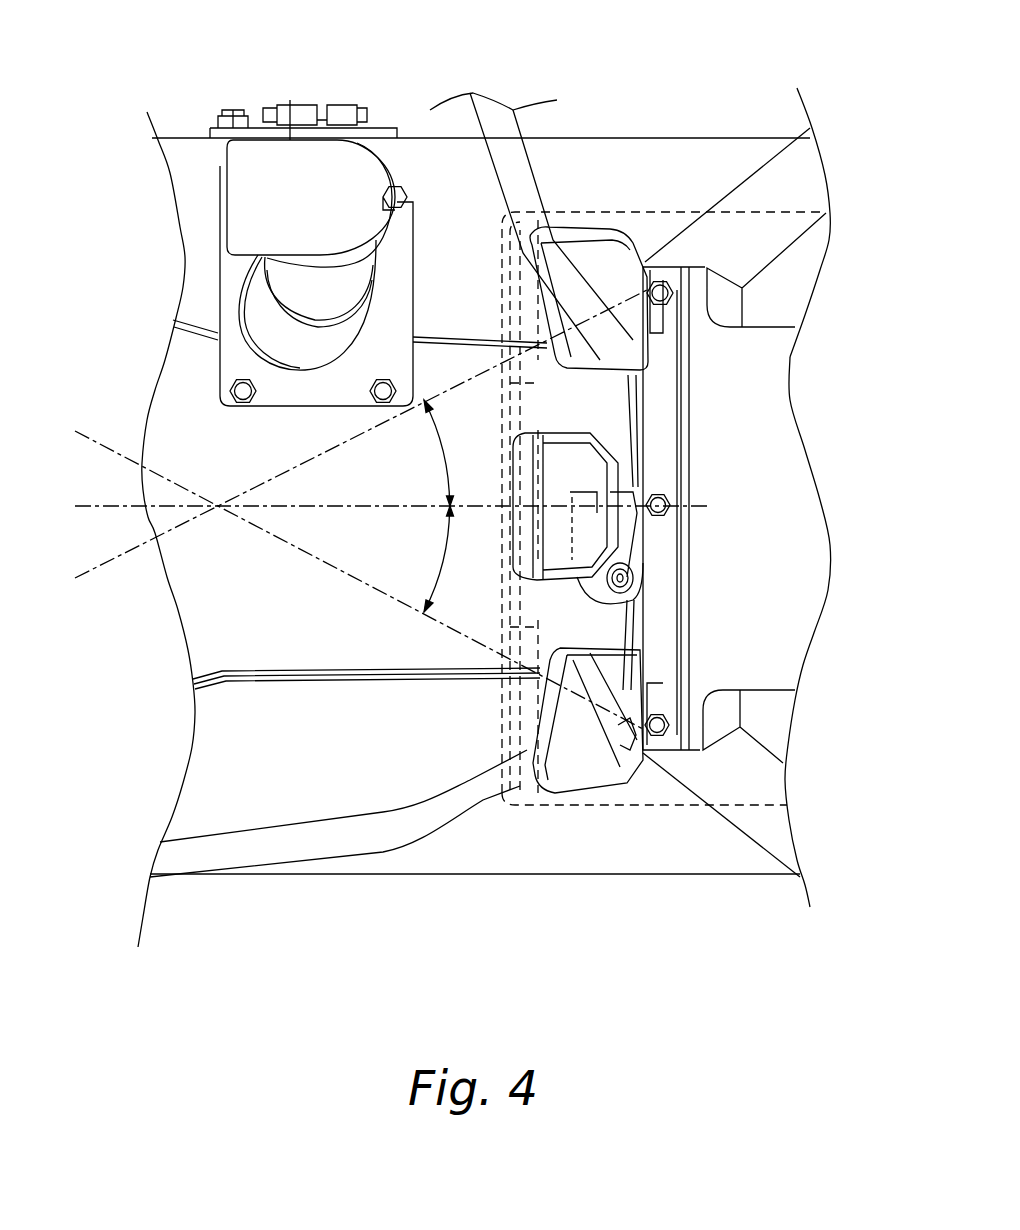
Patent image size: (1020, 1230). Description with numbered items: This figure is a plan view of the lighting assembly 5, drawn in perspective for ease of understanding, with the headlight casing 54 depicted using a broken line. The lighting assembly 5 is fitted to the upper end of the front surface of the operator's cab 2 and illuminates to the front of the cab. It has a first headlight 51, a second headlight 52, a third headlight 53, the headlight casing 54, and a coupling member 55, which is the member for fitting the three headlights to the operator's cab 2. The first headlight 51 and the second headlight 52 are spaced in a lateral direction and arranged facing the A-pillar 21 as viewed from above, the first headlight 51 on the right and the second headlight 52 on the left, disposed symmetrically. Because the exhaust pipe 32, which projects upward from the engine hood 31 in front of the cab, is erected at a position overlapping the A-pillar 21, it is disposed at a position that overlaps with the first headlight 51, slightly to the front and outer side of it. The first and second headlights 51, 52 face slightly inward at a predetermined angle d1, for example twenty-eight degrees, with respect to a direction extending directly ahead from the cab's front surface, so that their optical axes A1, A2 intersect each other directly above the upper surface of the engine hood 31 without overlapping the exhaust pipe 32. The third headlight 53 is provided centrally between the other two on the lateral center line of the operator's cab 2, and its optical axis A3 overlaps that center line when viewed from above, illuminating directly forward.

The operator's cab 2 is at (770, 300).
The lighting assembly 5 is at (667, 183).
The A-pillar 21 is at (725, 270).
The engine hood 31 is at (207, 593).
The exhaust pipe 32 is at (312, 167).
The first headlight 51 is at (547, 303).
The second headlight 52 is at (537, 727).
The third headlight 53 is at (540, 487).
The headlight casing 54 is at (613, 210).
The coupling member 55 is at (790, 493).
The optical axis of the first headlight A1 is at (293, 463).
The optical axis of the second headlight A2 is at (334, 576).
The optical axis of the third headlight A3 is at (393, 508).
The predetermined angle d1 is at (455, 506).